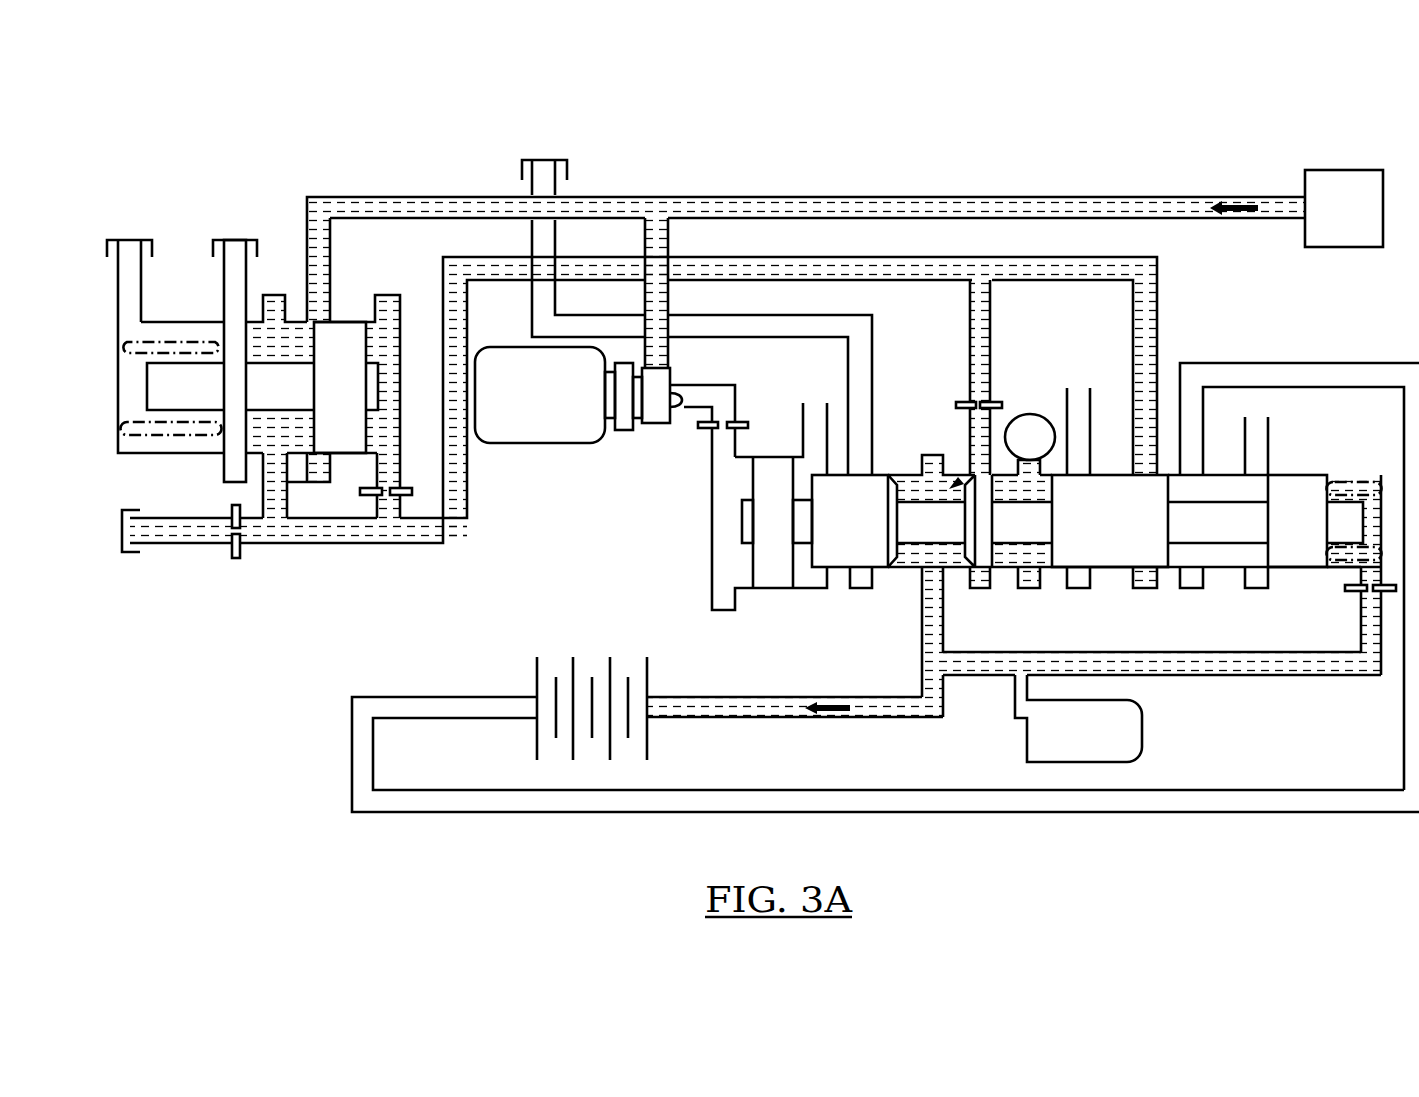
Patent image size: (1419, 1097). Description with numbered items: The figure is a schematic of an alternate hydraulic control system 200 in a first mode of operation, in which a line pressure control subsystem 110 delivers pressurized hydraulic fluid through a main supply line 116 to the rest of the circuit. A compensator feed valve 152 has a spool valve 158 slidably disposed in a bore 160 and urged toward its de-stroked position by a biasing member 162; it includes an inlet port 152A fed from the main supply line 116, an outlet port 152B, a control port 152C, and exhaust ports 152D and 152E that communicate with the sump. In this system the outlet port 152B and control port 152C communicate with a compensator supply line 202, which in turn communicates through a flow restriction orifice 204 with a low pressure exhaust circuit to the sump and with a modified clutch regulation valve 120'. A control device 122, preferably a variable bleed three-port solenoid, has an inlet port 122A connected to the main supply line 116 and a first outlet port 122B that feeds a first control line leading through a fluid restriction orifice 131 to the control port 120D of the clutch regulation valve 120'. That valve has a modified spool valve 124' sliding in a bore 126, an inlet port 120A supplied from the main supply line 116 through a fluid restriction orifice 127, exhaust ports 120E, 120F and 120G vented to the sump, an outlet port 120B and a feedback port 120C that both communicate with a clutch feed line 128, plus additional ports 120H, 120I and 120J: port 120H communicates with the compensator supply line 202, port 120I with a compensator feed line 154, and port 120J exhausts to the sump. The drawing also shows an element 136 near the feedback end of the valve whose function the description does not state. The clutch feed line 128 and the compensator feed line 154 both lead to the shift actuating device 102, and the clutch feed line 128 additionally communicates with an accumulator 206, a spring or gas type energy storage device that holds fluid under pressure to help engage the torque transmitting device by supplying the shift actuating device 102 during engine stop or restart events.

The hydraulic control system 200 is at (1163, 163).
The line pressure control subsystem 110 is at (1366, 225).
The main supply line 116 is at (1244, 221).
The compensator supply line 202 is at (1159, 293).
The inlet port 152A is at (310, 318).
The exhaust port 152D is at (127, 318).
The exhaust port 152E is at (237, 318).
The bore 160 is at (181, 442).
The biasing member 162 is at (160, 432).
The compensator feed valve 152 is at (166, 505).
The spool valve 158 is at (347, 345).
The outlet port 152B is at (275, 458).
The control port 152C is at (385, 458).
The flow restriction orifice 204 is at (236, 559).
The control device 122 is at (523, 444).
The inlet port 122A is at (657, 368).
The first outlet port 122B is at (678, 398).
The control port 120D is at (722, 455).
The fluid restriction orifice 131 is at (735, 420).
The exhaust port 120E is at (815, 455).
The bore 126 is at (800, 589).
The modified spool valve 124' is at (850, 568).
The exhaust port 120F is at (858, 471).
The inlet port 120A is at (971, 477).
The fluid restriction orifice 127 is at (1003, 399).
The exhaust port 120G is at (1073, 470).
The port 120H is at (1143, 465).
The port 120I is at (1188, 470).
The exhaust port 120J is at (1255, 471).
The modified clutch regulation valve 120' is at (1299, 576).
The bearing 136 is at (1331, 572).
The feedback port 120C is at (1372, 602).
The clutch feed line 128 is at (1284, 674).
The accumulator 206 is at (1143, 733).
The outlet port 120B is at (930, 568).
The compensator feed line 154 is at (808, 788).
The shift actuating device 102 is at (518, 660).